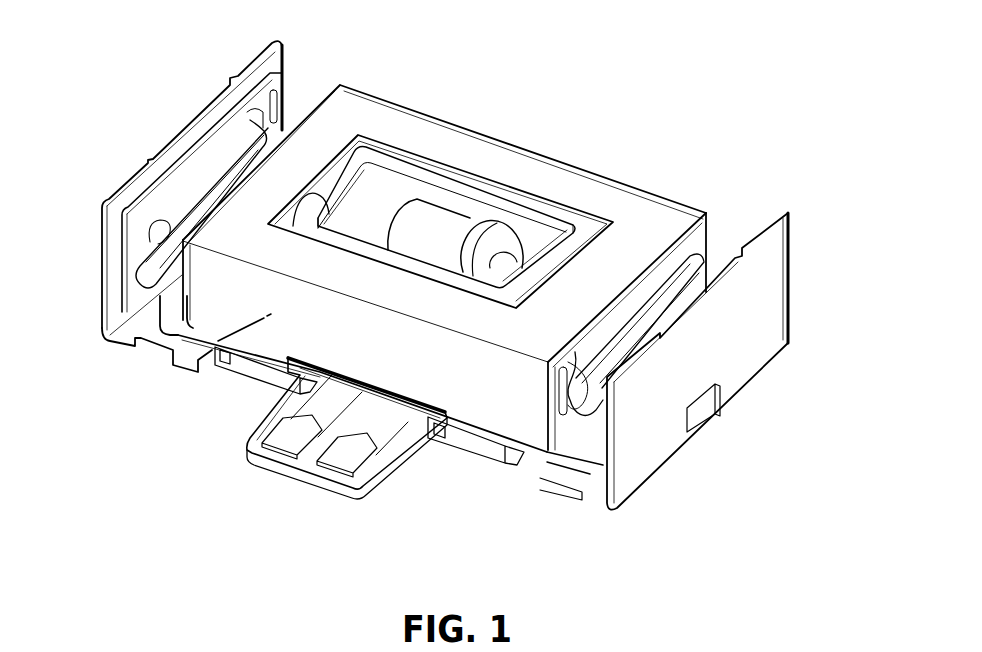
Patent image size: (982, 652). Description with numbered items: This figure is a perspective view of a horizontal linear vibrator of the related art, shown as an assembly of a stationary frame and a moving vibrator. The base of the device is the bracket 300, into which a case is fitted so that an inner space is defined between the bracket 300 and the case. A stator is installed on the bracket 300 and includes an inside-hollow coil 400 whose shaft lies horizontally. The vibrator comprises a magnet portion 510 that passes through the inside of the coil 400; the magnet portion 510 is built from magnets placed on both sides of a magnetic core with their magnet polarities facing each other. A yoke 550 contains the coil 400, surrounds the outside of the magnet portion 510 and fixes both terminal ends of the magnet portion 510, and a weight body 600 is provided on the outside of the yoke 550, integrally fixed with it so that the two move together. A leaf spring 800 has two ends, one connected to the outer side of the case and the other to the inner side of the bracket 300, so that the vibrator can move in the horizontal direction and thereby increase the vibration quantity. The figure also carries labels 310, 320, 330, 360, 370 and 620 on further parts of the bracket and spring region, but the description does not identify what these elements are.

The bracket 300 is at (778, 392).
The right side plate 310 is at (772, 297).
The elastic spring member 320 is at (247, 127).
The lens end cap 330 is at (505, 235).
The hole 360 is at (507, 257).
The terminal plate 370 is at (308, 460).
The coil 400 is at (452, 226).
The magnet portion 510 is at (365, 228).
The yoke 550 is at (597, 218).
The weight body 600 is at (657, 213).
The right spring 620 is at (603, 398).
The leaf spring 800 is at (140, 189).